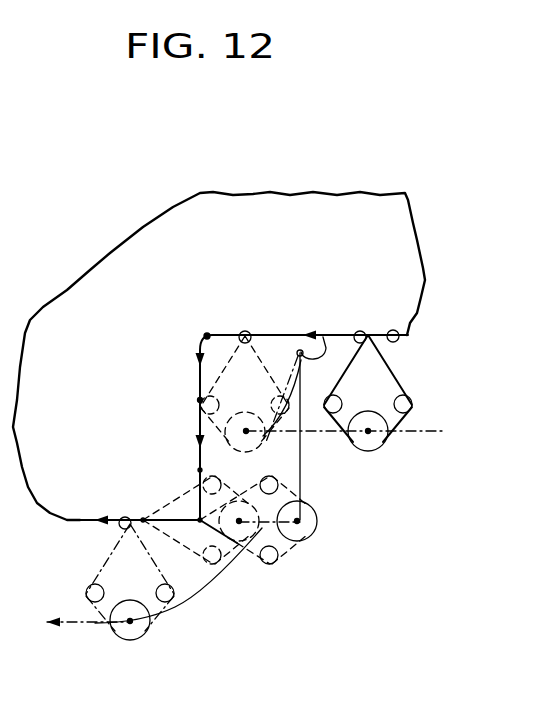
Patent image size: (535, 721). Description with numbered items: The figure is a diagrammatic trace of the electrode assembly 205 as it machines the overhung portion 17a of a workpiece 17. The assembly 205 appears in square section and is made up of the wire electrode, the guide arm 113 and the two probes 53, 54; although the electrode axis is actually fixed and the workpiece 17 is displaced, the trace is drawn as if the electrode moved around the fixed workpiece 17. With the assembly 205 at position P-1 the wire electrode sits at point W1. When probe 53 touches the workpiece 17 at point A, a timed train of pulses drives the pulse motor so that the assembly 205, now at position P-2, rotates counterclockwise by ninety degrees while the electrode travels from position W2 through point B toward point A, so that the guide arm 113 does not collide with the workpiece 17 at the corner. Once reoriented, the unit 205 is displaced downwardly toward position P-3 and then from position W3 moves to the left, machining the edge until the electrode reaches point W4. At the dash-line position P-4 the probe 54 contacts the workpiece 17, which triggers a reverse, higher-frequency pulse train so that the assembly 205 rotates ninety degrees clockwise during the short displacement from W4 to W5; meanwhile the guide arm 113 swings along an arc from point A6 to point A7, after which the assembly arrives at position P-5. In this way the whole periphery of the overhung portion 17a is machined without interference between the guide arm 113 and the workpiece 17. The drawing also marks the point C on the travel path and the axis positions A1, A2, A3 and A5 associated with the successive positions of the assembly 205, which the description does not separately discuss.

The workpiece 17 is at (417, 226).
The overhung portion 17a is at (391, 330).
The point W1 is at (359, 330).
The position W2 is at (244, 330).
The position W3 is at (200, 518).
The point W4 is at (143, 519).
The position W5 is at (121, 520).
The point A is at (199, 400).
The point B is at (207, 334).
The point C on travel path C is at (199, 470).
The axis position 1 A1 is at (369, 433).
The axis position 2 A2 is at (250, 432).
The axis position 3 A3 is at (322, 337).
The axis position 5 A5 is at (300, 522).
The point A6 is at (239, 524).
The point A7 is at (130, 624).
The probe 53 is at (334, 399).
The probe 54 is at (408, 400).
The guide arm 113 is at (348, 424).
The electrode assembly 205 is at (401, 371).
The position P-1 is at (405, 371).
The position P-2 is at (196, 363).
The position P-3 is at (291, 536).
The position P-4 is at (172, 555).
The carriage position 5 P-5 is at (100, 591).